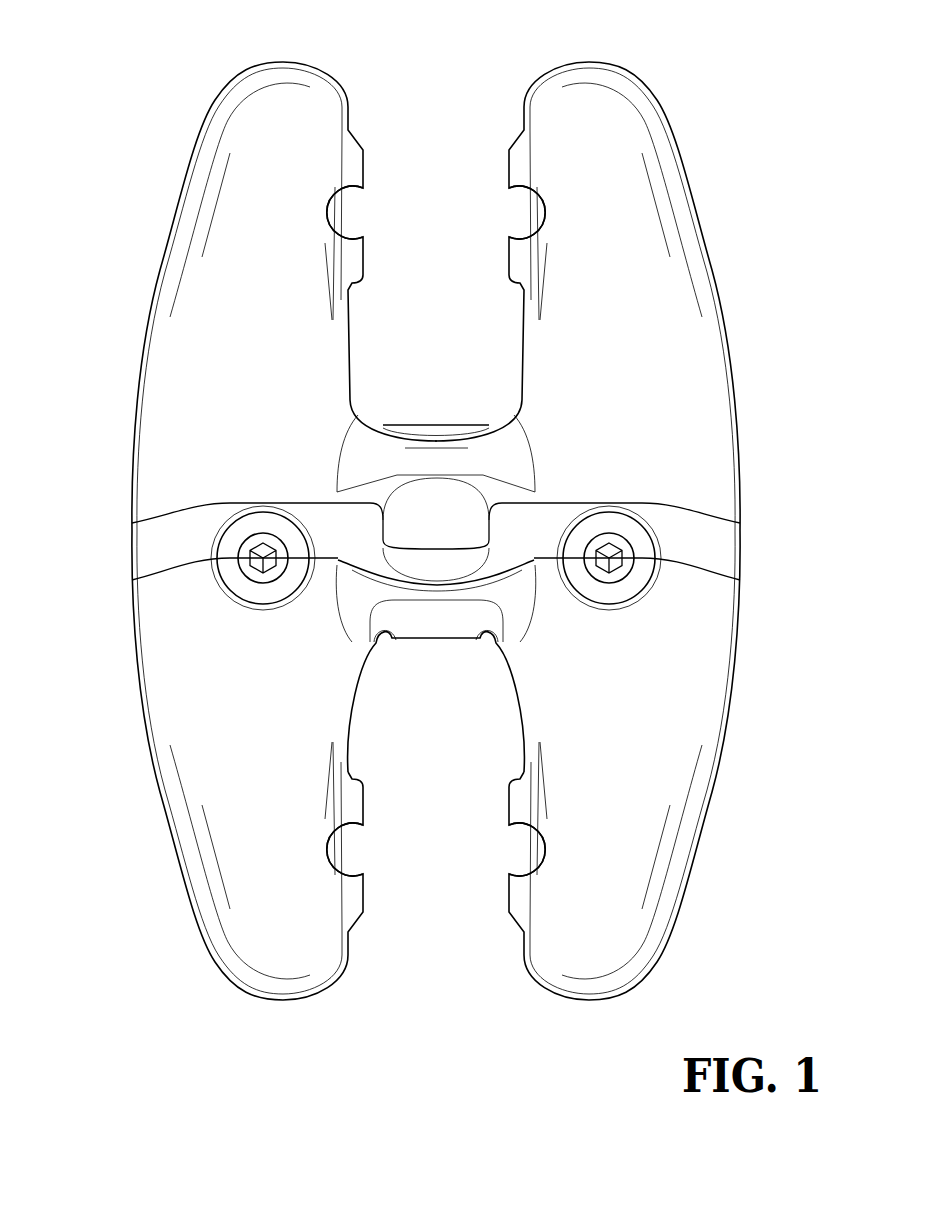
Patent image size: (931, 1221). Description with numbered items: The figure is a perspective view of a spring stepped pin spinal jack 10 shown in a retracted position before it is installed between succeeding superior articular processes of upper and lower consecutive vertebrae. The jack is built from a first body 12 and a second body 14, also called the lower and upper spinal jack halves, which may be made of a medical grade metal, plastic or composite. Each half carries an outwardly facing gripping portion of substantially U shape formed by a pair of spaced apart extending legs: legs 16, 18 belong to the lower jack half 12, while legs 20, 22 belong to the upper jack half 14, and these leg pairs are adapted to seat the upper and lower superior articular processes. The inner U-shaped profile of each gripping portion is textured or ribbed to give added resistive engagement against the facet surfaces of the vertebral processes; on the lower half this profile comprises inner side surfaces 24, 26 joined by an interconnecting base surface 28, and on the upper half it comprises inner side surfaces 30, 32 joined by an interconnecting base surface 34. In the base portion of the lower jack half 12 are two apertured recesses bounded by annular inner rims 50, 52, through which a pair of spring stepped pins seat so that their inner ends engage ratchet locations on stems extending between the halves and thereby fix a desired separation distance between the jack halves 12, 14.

The spinal jack 10 is at (104, 249).
The first body 12 is at (160, 633).
The second body 14 is at (170, 432).
The leg 16 is at (285, 967).
The leg 18 is at (597, 967).
The leg 20 is at (281, 92).
The leg 22 is at (589, 92).
The inner side surface 24 is at (366, 876).
The inner side surface 26 is at (506, 876).
The interconnecting base surface 28 is at (447, 642).
The inner side surface 30 is at (366, 240).
The inner side surface 32 is at (506, 240).
The interconnecting base surface 34 is at (446, 437).
The annular inner rim 50 is at (240, 550).
The annular inner rim 52 is at (630, 548).